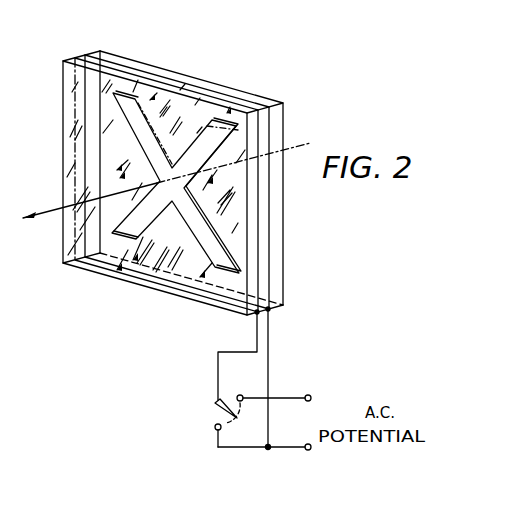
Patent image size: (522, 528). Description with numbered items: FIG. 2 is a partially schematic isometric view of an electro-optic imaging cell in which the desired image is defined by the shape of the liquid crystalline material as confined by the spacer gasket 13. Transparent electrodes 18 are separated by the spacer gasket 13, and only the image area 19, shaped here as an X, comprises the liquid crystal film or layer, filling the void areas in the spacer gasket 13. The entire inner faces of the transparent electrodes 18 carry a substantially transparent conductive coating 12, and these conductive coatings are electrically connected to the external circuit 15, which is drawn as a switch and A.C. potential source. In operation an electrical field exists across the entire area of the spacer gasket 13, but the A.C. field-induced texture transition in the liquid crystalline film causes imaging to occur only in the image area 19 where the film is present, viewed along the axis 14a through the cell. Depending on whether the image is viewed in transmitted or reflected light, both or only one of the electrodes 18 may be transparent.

The transparent conductive coating 12 is at (78, 56).
The spacer gasket 13 is at (84, 55).
The transparent electrodes 18 is at (68, 63).
The image area 19 is at (148, 154).
The viewing axis 14a is at (165, 198).
The external circuit 15 is at (306, 364).